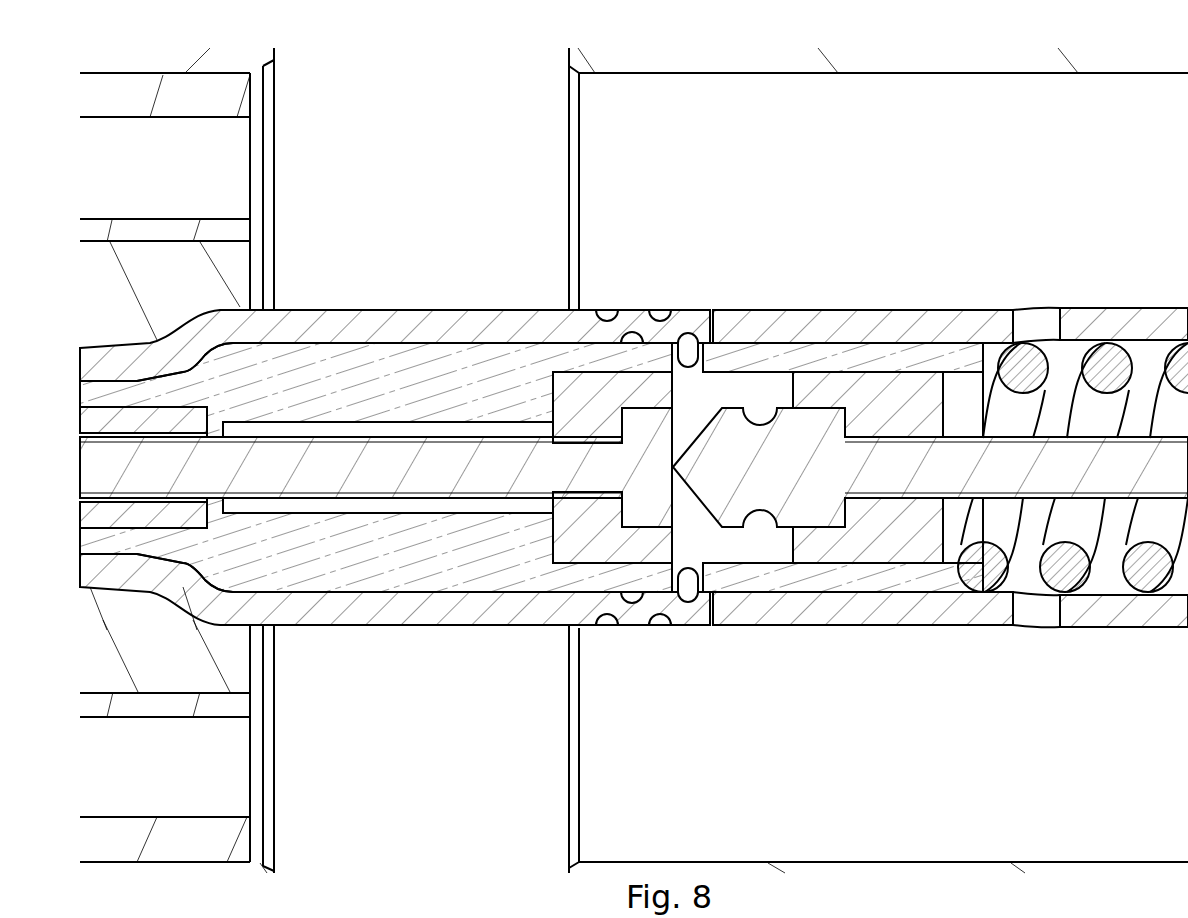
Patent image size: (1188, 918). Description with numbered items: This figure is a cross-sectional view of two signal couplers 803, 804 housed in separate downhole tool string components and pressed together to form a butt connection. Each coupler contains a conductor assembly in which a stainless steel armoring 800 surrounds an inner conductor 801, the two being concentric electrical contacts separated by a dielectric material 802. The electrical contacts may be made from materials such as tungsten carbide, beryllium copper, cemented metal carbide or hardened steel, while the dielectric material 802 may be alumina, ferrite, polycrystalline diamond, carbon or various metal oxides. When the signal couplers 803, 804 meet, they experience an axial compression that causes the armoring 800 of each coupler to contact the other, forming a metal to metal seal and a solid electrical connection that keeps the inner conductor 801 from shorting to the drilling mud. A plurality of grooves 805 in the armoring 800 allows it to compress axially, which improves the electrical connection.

The stainless steel armoring 800 is at (395, 495).
The inner conductor 801 is at (383, 468).
The dielectric material 802 is at (472, 381).
The signal coupler 803 is at (504, 657).
The signal coupler 804 is at (811, 663).
The grooves 805 is at (660, 300).